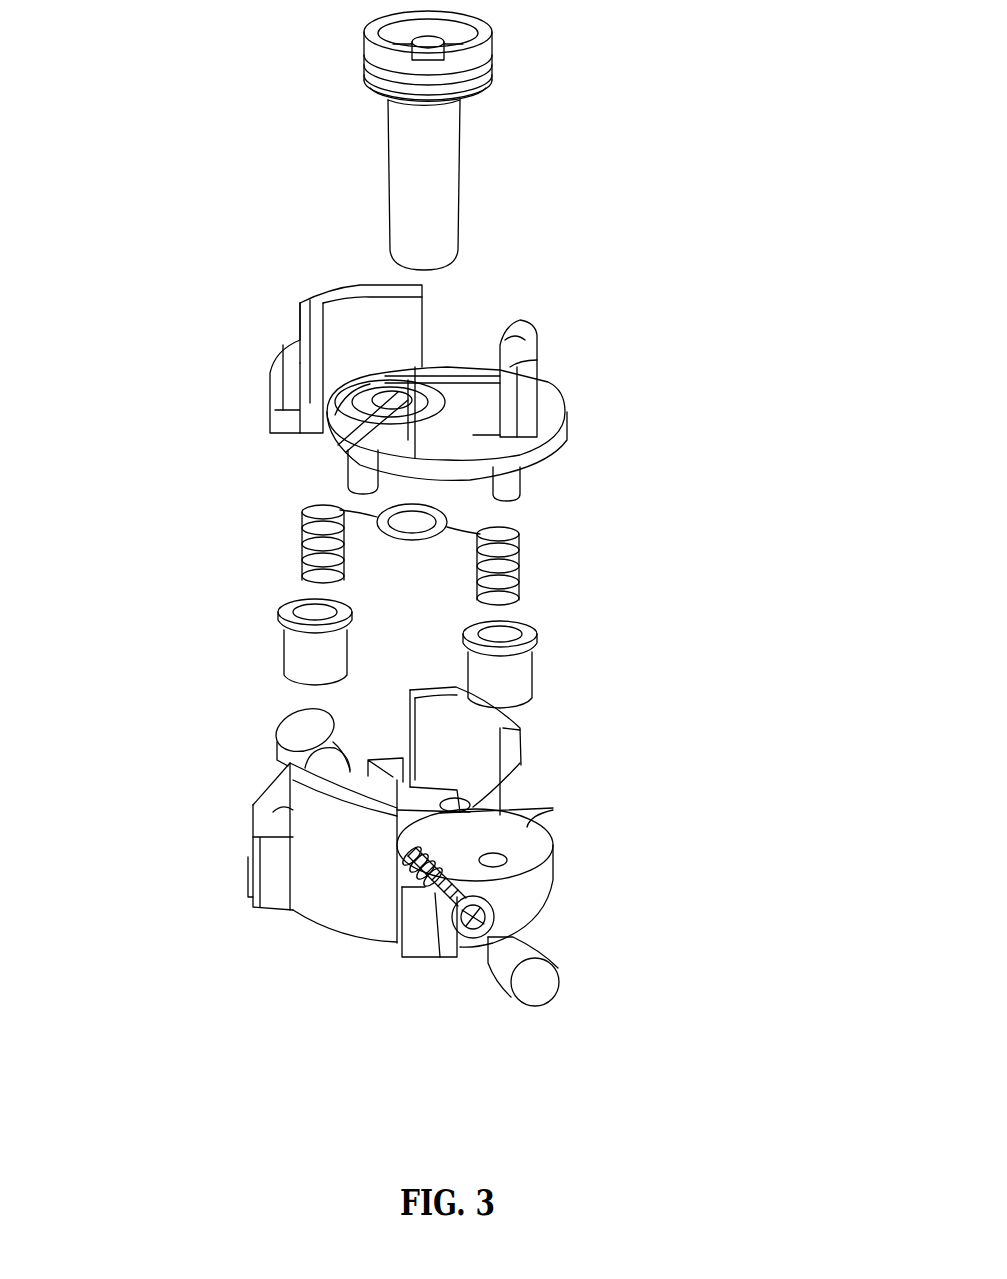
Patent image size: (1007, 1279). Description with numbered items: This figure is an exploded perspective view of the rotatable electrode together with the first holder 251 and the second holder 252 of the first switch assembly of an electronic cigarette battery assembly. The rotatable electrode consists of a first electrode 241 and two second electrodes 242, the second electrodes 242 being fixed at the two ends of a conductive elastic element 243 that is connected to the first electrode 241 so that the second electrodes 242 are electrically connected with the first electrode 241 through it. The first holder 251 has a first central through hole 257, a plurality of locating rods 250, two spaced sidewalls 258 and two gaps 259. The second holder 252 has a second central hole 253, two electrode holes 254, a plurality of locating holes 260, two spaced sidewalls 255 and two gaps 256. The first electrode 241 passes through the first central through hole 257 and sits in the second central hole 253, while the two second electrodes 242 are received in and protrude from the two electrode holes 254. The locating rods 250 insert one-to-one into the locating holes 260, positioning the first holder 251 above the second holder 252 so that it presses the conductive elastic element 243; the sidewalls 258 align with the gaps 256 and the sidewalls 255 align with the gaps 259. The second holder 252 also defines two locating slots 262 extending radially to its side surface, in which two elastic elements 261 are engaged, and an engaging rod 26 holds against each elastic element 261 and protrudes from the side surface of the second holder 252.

The first electrode 241 is at (305, 140).
The spaced sidewalls 258 is at (518, 343).
The gaps 259 is at (590, 363).
The first holder 251 is at (566, 425).
The locating rods 250 is at (588, 519).
The first central through hole 257 is at (221, 388).
The second electrodes 242 is at (237, 620).
The conductive elastic element 243 is at (632, 627).
The gaps 256 is at (187, 738).
The second central hole 253 is at (578, 751).
The electrode holes 254 is at (579, 856).
The spaced sidewalls 255 is at (225, 836).
The locating holes 260 is at (616, 861).
The second holder 252 is at (244, 885).
The locating slots 262 is at (324, 986).
The elastic elements 261 is at (445, 954).
The engaging rod 26 is at (630, 958).